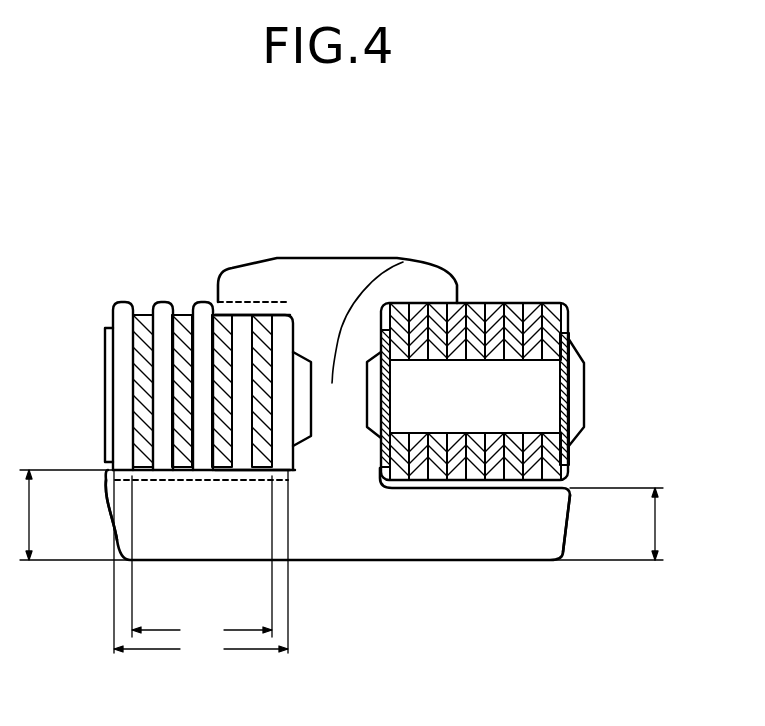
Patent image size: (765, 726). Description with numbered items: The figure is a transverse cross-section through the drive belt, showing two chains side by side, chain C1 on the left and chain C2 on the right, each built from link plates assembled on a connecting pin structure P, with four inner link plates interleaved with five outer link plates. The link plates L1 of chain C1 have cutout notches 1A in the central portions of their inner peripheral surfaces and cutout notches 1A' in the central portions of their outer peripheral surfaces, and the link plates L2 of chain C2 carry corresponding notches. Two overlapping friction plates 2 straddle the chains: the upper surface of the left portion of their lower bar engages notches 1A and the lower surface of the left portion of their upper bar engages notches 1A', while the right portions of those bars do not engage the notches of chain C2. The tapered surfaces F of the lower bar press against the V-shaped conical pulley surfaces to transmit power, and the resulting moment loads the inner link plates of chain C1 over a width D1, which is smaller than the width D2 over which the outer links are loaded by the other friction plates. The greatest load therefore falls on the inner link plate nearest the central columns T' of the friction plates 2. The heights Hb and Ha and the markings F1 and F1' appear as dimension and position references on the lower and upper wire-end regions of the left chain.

The friction plates 2 is at (352, 262).
The central columns T' is at (392, 290).
The chain C1 is at (178, 349).
The chain C2 is at (511, 355).
The link plates L1 is at (133, 410).
The link plates L2 is at (573, 453).
The connecting pin structure P is at (583, 387).
The tapered surfaces F is at (112, 515).
The lower flange / wire end F1 is at (201, 544).
The upper flange / wire end F1' is at (263, 249).
The cutout notches 1A is at (252, 541).
The cutout notches 1A' is at (244, 261).
The height Hb is at (341, 515).
The height Ha is at (624, 524).
The width D1 is at (202, 561).
The width D2 is at (201, 571).